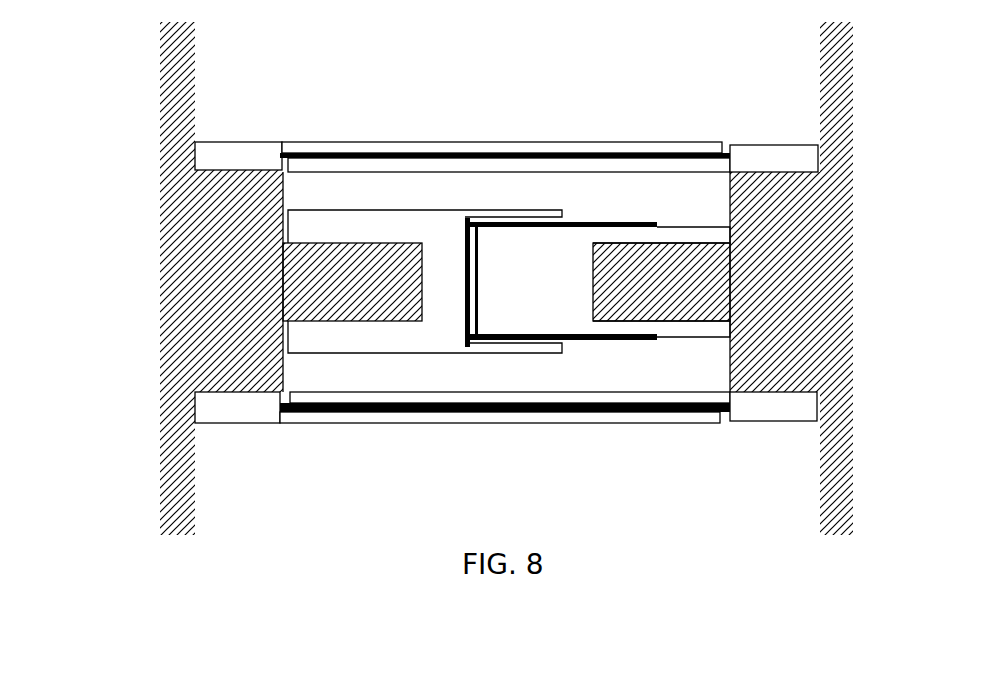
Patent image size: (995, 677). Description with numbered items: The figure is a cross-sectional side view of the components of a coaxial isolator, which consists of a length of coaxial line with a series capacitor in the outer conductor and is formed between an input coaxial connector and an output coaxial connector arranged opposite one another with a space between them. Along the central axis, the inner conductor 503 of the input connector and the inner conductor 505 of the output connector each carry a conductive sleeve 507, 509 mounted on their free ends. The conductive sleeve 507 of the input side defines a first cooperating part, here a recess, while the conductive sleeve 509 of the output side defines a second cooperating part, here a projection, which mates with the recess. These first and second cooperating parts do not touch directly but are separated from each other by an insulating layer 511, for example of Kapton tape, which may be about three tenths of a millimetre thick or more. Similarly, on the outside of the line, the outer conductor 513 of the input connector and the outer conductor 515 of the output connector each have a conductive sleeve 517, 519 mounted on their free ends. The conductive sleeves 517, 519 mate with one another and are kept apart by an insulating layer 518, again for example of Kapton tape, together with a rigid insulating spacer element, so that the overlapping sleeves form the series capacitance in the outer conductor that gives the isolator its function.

The inner conductor 503 is at (313, 321).
The inner conductor 505 is at (678, 321).
The conductive sleeve 507 is at (393, 340).
The conductive sleeve 509 is at (577, 321).
The insulating layer 511 is at (518, 338).
The outer conductor 513 is at (163, 146).
The outer conductor 515 is at (853, 155).
The conductive sleeve 517 is at (252, 150).
The insulating layer 518 is at (433, 152).
The conductive sleeve 519 is at (780, 153).